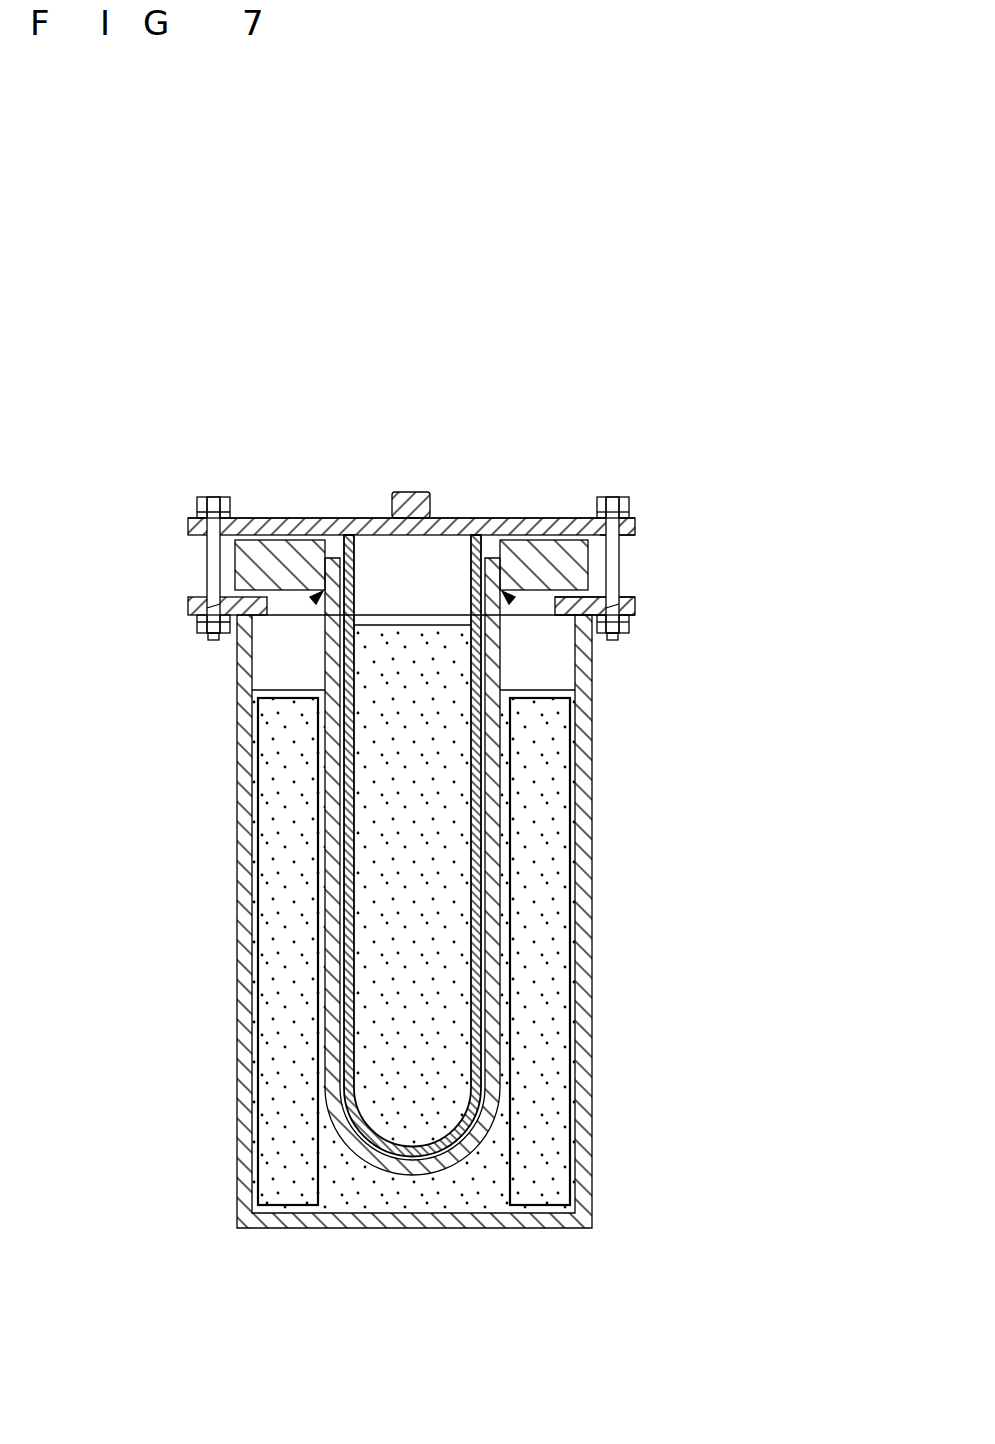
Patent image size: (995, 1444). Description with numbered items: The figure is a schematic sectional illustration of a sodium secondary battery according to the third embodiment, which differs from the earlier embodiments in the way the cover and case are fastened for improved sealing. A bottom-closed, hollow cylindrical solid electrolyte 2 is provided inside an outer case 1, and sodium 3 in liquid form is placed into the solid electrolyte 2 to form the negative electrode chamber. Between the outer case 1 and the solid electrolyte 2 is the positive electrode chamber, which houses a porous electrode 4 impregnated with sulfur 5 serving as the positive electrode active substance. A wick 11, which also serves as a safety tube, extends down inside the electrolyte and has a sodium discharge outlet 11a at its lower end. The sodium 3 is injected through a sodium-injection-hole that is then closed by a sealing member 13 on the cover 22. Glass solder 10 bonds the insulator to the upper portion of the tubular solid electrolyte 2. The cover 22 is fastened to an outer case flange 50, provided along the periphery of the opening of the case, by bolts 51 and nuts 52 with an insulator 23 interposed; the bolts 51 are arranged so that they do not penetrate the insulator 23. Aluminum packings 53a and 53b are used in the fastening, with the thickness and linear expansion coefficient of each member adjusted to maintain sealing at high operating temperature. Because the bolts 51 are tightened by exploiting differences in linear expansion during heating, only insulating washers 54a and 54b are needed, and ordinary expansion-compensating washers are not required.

The outer case 1 is at (592, 931).
The solid electrolyte 2 is at (503, 863).
The sodium 3 is at (452, 806).
The porous electrode 4 is at (548, 1006).
The sulfur 5 is at (493, 1163).
The glass solder 10 is at (322, 592).
The wick 11 is at (341, 537).
The sodium discharge outlet 11a is at (413, 1152).
The sealing member 13 is at (413, 491).
The cover 22 is at (498, 519).
The insulator 23 is at (582, 562).
The outer case flange 50 is at (636, 605).
The bolts 51 is at (612, 497).
The nuts 52 is at (628, 637).
The aluminum packing 53a is at (636, 536).
The aluminum packing 53b is at (600, 591).
The insulating washer 54a is at (632, 520).
The insulating washer 54b is at (634, 619).